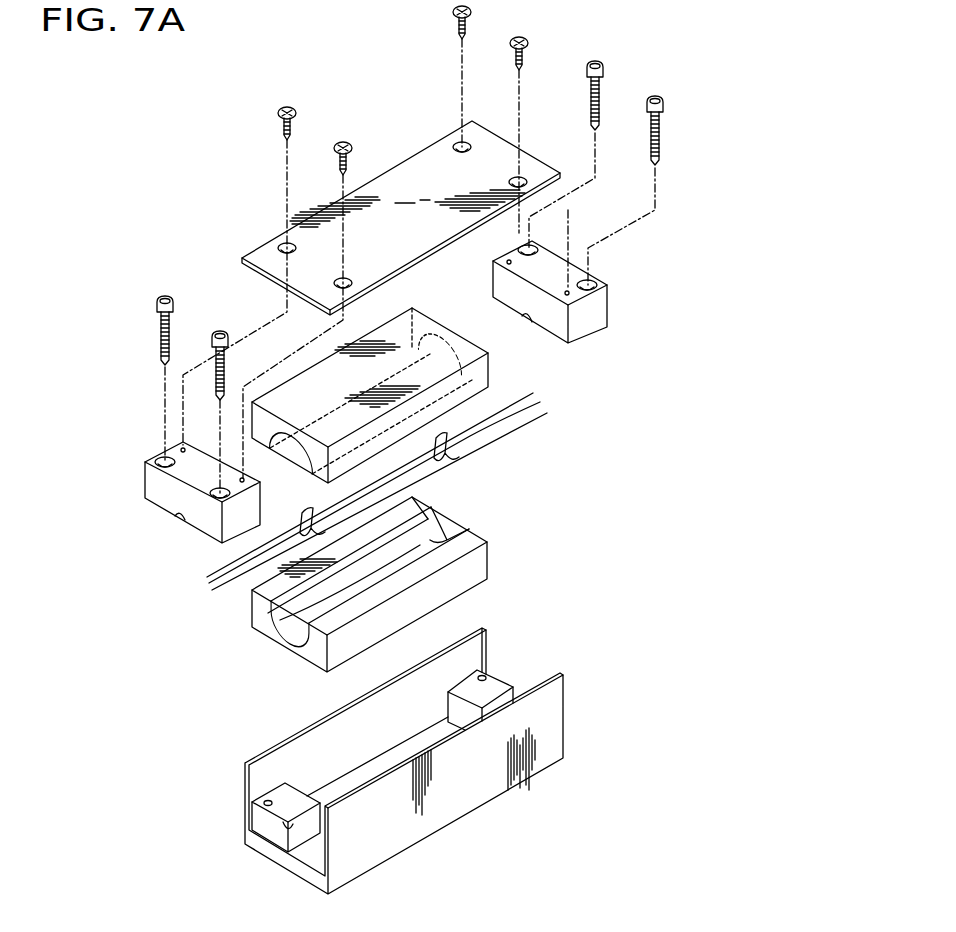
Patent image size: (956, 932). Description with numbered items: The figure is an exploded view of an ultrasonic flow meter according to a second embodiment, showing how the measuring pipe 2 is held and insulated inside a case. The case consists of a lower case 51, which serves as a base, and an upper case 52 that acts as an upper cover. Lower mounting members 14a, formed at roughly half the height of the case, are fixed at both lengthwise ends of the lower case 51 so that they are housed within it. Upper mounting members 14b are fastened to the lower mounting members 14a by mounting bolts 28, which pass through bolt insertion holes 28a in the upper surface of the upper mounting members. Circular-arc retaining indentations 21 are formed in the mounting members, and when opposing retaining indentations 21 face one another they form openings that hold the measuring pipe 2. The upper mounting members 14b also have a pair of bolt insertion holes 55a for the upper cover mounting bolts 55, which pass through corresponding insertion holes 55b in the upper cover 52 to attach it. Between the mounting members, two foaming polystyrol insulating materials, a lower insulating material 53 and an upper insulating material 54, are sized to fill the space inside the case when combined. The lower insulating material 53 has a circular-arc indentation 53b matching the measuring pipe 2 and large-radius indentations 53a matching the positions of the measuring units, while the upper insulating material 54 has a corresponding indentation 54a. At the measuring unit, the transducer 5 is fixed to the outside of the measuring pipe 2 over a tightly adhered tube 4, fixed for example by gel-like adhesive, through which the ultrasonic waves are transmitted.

The measuring pipe 2 is at (530, 398).
The tightly adhered tube 4 is at (446, 456).
The transducer 5 is at (452, 450).
The lower mounting member 14a is at (512, 686).
The upper mounting member 14b is at (147, 484).
The retaining indentation 21 is at (180, 519).
The mounting bolt 28 is at (158, 304).
The screw hole 28a is at (158, 460).
The lower case 51 is at (478, 796).
The upper case 52 is at (404, 172).
The lower insulating material 53 is at (485, 563).
The indentation 53a is at (443, 540).
The indentation 53b is at (380, 562).
The upper insulating material 54 is at (432, 310).
The groove 54a is at (296, 444).
The upper cover mounting bolt 55 is at (278, 111).
The bolt insertion hole 55a is at (181, 447).
The insertion hole 55b is at (458, 144).